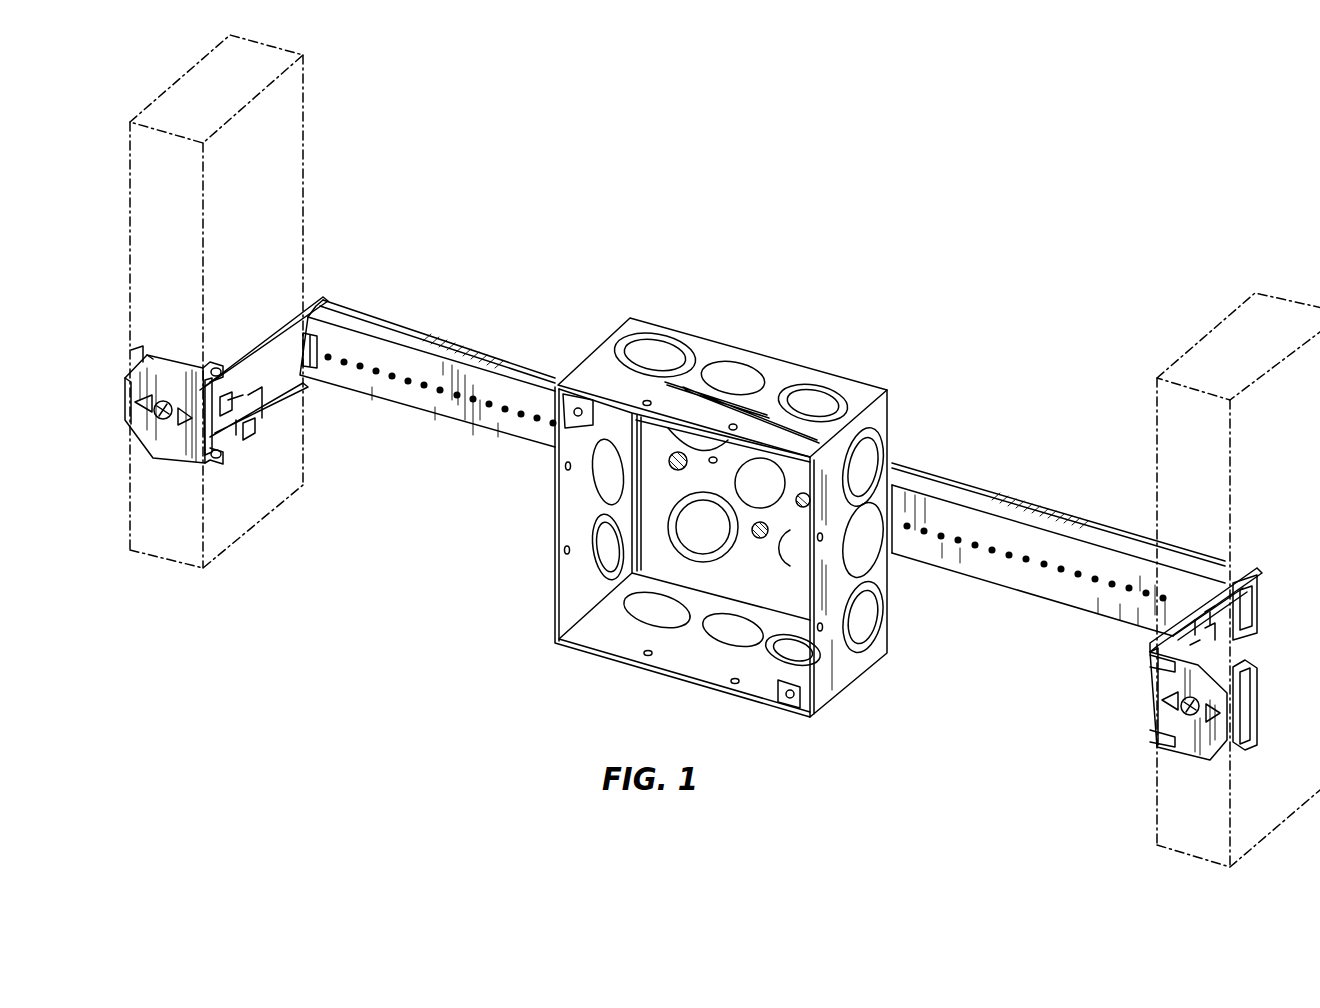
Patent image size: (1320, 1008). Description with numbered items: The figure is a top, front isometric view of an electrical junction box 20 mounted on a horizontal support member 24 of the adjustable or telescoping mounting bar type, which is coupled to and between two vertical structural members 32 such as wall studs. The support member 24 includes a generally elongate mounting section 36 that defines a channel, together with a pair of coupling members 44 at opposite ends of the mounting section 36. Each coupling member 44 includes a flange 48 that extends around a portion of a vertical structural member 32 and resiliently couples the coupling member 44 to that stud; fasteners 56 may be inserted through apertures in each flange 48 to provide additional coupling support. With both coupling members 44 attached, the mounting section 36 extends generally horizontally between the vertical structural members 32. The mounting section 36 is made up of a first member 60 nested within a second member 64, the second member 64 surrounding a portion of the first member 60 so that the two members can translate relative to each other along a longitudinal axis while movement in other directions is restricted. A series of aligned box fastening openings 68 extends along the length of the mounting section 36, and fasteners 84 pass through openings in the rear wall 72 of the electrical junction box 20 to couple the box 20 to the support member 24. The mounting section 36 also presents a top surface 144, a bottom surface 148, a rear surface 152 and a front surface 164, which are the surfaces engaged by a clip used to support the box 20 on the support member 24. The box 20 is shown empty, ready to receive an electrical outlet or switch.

The electrical junction box 20 is at (731, 483).
The horizontal support member 24 is at (1058, 553).
The vertical structural member 32 is at (150, 562).
The mounting section 36 is at (1058, 539).
The coupling member 44 is at (665, 523).
The flange 48 is at (138, 425).
The fastener 56 is at (170, 398).
The first member 60 is at (427, 376).
The second member 64 is at (1017, 595).
The box fastening openings 68 is at (423, 388).
The rear wall 72 is at (665, 553).
The fasteners 84 is at (672, 454).
The top surface 144 is at (392, 335).
The bottom surface 148 is at (527, 452).
The rear surface 152 is at (1045, 507).
The front surface 164 is at (968, 557).